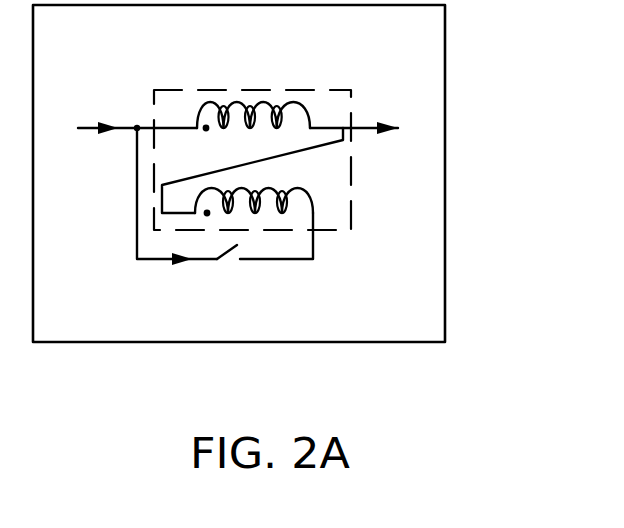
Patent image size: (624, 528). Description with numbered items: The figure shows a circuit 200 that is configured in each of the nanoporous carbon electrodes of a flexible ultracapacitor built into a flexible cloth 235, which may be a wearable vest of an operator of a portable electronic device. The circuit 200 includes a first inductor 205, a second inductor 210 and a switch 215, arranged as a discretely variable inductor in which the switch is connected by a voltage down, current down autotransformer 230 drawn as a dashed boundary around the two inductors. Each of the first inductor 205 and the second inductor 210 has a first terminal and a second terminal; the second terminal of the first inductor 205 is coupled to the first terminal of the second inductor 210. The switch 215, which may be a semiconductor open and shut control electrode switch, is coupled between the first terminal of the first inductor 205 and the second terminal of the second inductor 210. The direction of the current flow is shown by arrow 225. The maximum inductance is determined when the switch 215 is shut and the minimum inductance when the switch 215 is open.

The circuit 200 is at (292, 208).
The first inductor 205 is at (215, 90).
The second inductor 210 is at (272, 188).
The switch 215 is at (225, 261).
The arrow 225 is at (102, 120).
The autotransformer 230 is at (353, 217).
The flexible cloth 235 is at (448, 135).